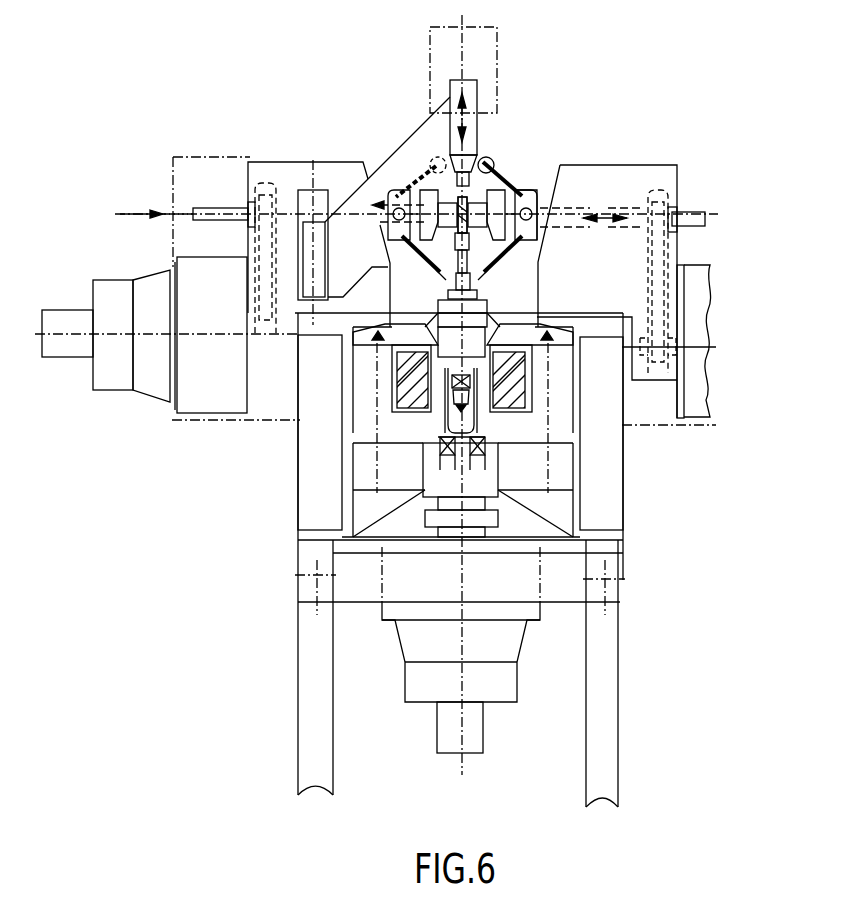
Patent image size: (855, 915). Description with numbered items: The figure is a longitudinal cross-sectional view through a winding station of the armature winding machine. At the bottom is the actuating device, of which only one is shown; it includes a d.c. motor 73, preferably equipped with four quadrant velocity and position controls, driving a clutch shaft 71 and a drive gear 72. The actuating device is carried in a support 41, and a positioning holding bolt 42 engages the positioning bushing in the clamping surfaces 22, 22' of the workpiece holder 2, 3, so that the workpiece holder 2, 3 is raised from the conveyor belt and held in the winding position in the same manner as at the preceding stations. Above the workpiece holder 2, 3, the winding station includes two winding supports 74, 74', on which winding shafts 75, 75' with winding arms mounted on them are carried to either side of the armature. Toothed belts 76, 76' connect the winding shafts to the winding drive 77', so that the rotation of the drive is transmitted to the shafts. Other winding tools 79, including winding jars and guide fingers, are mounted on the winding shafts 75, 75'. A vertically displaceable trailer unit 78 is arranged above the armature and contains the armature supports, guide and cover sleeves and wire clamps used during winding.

The workpiece holder 2 is at (428, 301).
The workpiece holder 3 is at (462, 215).
The clamping surface 22 is at (583, 405).
The clamping surface 22' is at (308, 402).
The support 41 is at (352, 380).
The positioning holding bolt 42 is at (550, 362).
The clutch shaft 71 is at (445, 413).
The drive gear 72 is at (385, 558).
The d.c. motor 73 is at (410, 635).
The winding support 74 is at (624, 237).
The winding support 74' is at (311, 188).
The winding shaft 75 is at (550, 147).
The winding shaft 75' is at (343, 187).
The toothed belt 76 is at (669, 214).
The toothed belt 76' is at (218, 191).
The winding drive 77' is at (144, 378).
The trailer unit 78 is at (458, 85).
The winding tools 79 is at (428, 175).